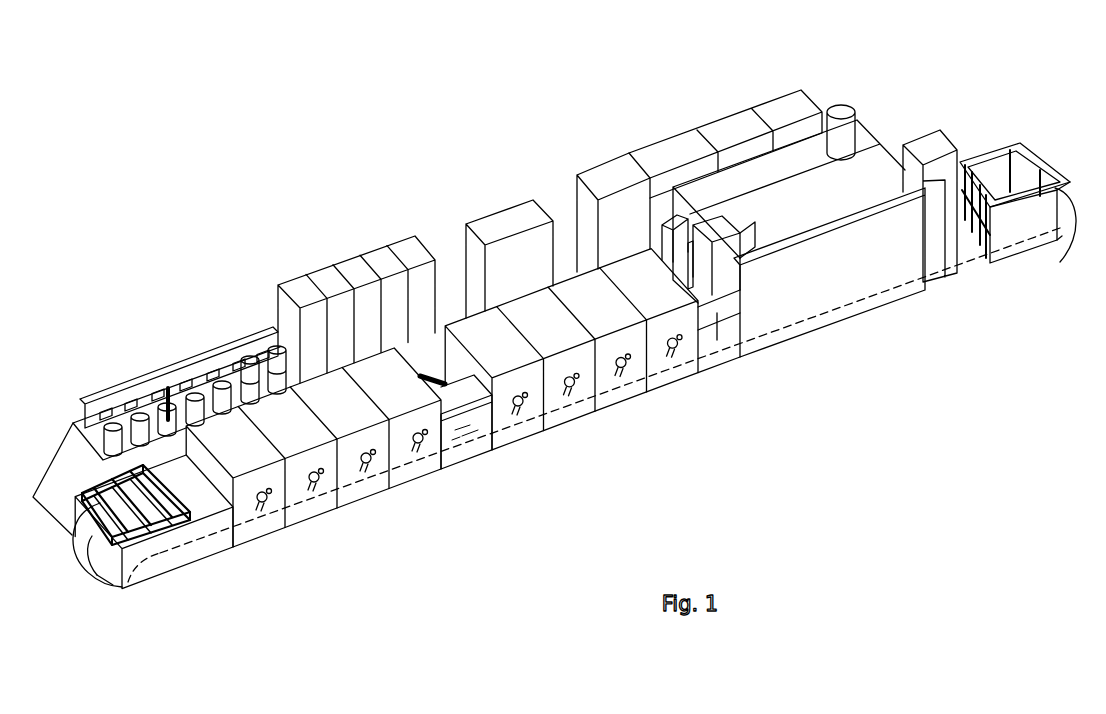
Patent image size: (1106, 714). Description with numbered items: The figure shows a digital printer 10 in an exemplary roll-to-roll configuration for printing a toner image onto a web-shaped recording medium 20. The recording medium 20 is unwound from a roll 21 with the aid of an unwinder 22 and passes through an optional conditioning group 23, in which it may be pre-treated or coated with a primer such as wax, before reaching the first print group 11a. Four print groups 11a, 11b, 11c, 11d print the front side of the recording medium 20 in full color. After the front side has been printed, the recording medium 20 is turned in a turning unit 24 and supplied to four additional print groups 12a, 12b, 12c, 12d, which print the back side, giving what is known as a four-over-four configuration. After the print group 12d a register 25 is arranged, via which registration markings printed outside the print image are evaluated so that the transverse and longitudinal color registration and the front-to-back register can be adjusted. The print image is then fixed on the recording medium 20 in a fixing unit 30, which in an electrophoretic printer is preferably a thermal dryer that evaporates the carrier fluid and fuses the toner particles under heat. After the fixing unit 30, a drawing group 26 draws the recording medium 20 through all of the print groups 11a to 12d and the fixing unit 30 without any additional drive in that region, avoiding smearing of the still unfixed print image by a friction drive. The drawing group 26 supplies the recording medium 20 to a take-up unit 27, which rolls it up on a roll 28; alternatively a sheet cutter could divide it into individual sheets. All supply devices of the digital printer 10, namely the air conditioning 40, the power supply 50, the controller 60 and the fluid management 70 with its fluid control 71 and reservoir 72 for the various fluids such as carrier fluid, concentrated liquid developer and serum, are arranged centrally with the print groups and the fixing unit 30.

The digital printer 10 is at (393, 78).
The print group 11a is at (257, 537).
The print group 11b is at (308, 513).
The print group 11c is at (362, 495).
The print group 11d is at (413, 477).
The print group 12a is at (525, 433).
The print group 12b is at (572, 413).
The print group 12c is at (627, 393).
The print group 12d is at (670, 373).
The recording medium 20 is at (250, 524).
The roll 21 is at (97, 572).
The unwinder 22 is at (165, 570).
The conditioning group 23 is at (210, 563).
The turning unit 24 is at (470, 453).
The register 25 is at (723, 352).
The drawing group 26 is at (943, 284).
The take-up unit 27 is at (1013, 252).
The roll 28 is at (1067, 213).
The fixing unit 30 is at (857, 340).
The air conditioning 40 is at (705, 77).
The power supply 50 is at (600, 146).
The controller 60 is at (486, 195).
The fluid management 70 is at (247, 230).
The fluid control 71 is at (339, 247).
The reservoir 72 is at (196, 351).